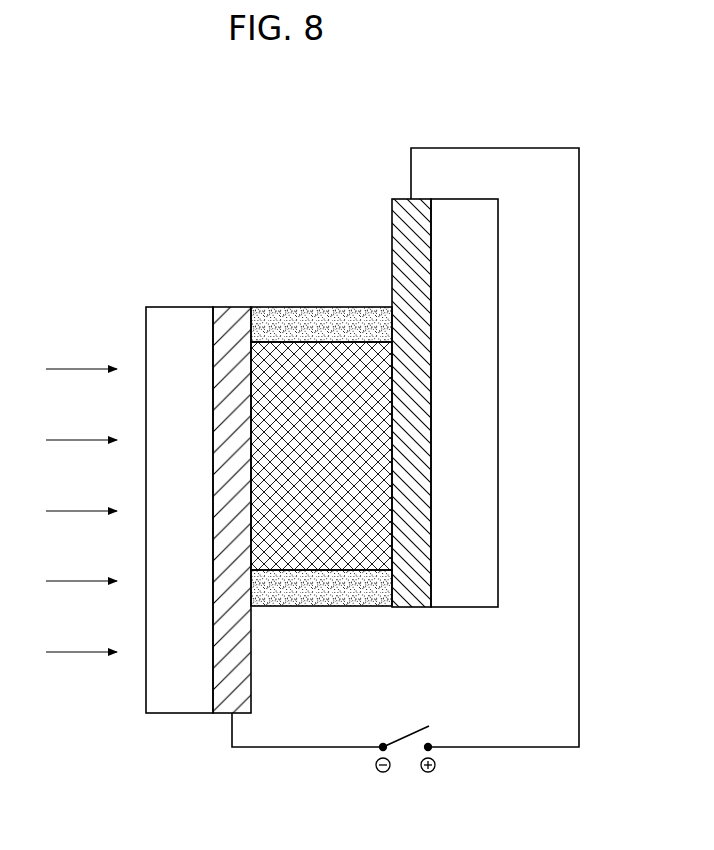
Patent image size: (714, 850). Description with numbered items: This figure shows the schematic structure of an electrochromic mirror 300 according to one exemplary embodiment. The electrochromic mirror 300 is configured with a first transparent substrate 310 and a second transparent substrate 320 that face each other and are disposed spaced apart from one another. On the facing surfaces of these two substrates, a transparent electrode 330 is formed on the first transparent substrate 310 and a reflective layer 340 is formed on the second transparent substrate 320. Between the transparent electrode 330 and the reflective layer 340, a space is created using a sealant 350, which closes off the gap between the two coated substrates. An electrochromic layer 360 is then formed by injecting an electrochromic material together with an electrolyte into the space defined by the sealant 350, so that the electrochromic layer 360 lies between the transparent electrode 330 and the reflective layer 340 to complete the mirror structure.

The electrochromic mirror 300 is at (172, 148).
The first transparent substrate 310 is at (183, 322).
The second transparent substrate 320 is at (470, 208).
The transparent electrode 330 is at (240, 322).
The reflective layer 340 is at (403, 199).
The sealant 350 is at (328, 322).
The electrochromic layer 360 is at (320, 577).